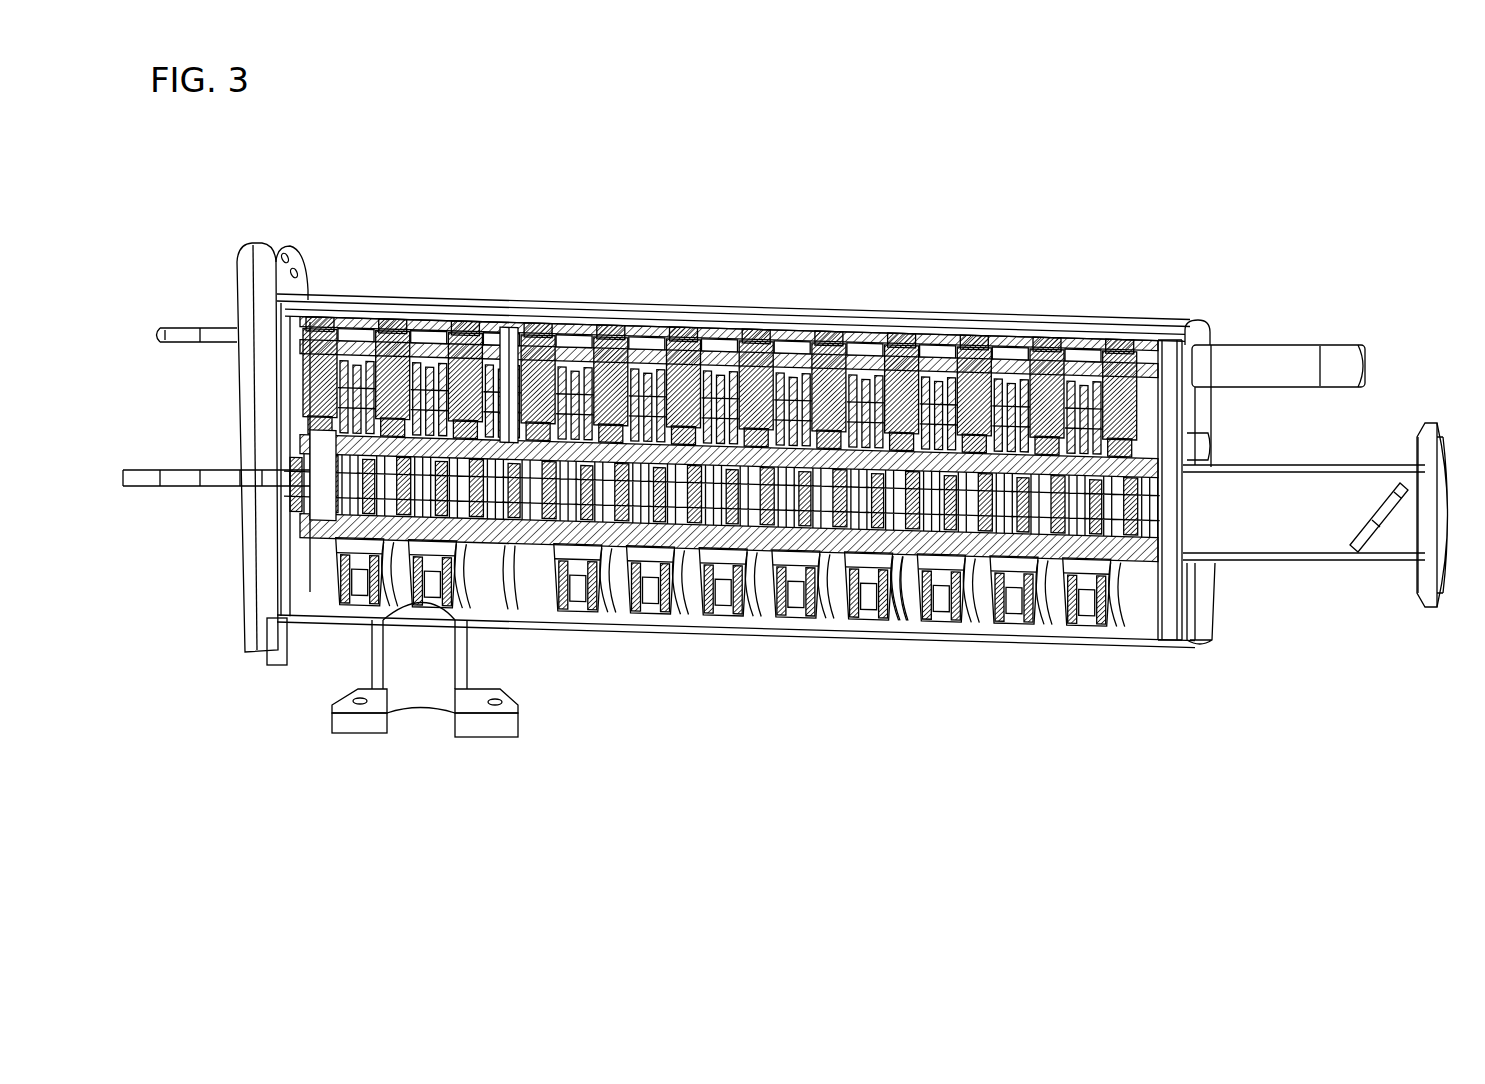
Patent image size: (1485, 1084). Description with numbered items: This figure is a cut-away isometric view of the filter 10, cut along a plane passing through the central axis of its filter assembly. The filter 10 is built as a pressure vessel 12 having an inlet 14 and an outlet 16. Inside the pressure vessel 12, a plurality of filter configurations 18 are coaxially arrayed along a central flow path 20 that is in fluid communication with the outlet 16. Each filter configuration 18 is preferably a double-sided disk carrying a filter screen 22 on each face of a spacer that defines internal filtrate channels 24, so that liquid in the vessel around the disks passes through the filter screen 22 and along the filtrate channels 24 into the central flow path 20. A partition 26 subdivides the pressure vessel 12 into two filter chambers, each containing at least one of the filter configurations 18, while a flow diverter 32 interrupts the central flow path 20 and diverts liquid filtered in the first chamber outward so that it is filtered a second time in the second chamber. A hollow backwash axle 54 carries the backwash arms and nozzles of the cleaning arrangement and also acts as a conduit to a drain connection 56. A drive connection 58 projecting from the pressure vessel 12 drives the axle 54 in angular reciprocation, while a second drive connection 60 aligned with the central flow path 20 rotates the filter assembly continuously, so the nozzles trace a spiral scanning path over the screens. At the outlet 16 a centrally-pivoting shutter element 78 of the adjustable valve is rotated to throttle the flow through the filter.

The filter 10 is at (1145, 100).
The pressure vessel 12 is at (1193, 320).
The inlet 14 is at (333, 724).
The outlet 16 is at (1433, 608).
The filter configuration 18 is at (360, 593).
The central flow path 20 is at (770, 510).
The filter screen 22 is at (900, 595).
The filtrate channel 24 is at (862, 600).
The partition 26 is at (530, 600).
The flow diverter 32 is at (520, 405).
The hollow backwash axle 54 is at (717, 345).
The drain connection 56 is at (1313, 342).
The drive connection 58 is at (180, 338).
The drive connection 60 is at (152, 490).
The shutter element 78 is at (1377, 540).